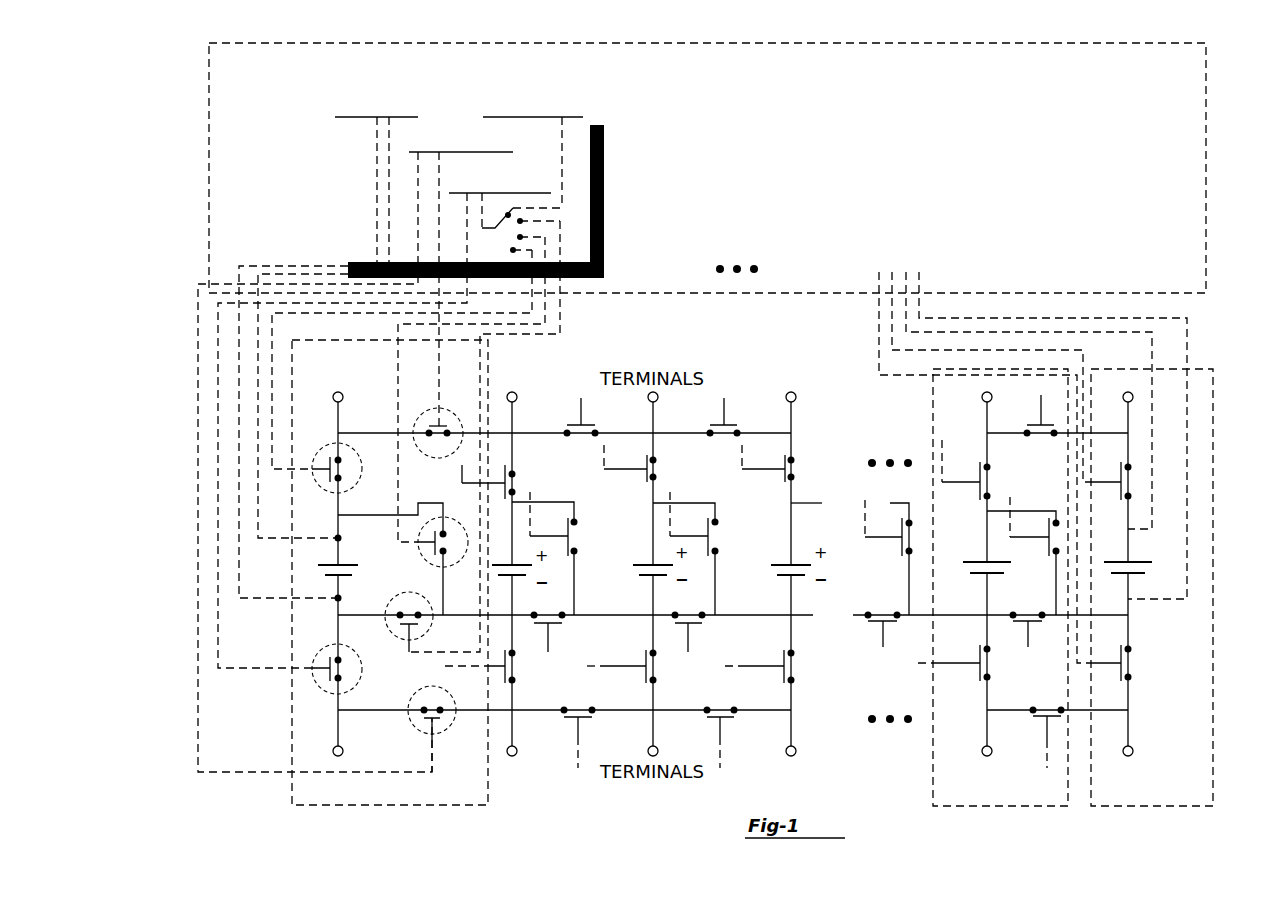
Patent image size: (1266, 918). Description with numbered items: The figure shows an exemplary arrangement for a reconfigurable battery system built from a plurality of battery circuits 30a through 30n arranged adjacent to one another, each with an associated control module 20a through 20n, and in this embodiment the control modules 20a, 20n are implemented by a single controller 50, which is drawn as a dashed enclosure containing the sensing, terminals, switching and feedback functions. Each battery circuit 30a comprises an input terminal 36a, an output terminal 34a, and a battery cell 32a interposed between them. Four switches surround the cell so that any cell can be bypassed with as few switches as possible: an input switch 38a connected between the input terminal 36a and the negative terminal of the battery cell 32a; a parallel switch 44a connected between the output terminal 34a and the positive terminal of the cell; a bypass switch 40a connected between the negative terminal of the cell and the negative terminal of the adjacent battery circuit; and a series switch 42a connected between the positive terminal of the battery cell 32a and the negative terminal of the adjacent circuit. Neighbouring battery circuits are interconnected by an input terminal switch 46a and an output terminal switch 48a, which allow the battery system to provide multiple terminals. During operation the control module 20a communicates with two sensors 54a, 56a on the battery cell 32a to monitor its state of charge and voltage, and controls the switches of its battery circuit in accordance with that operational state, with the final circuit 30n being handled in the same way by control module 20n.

The controller 50 is at (1207, 188).
The control module 20a is at (335, 176).
The control module 20n is at (955, 240).
The battery circuit 30a is at (488, 765).
The battery circuit 30n is at (1185, 806).
The battery cell 32a is at (333, 577).
The output terminal 34a is at (336, 392).
The input terminal 36a is at (345, 748).
The input switch 38a is at (327, 690).
The bypass switch 40a is at (405, 637).
The series switch 42a is at (423, 553).
The parallel switch 44a is at (315, 483).
The input terminal switch 46a is at (445, 730).
The output terminal switch 48a is at (452, 410).
The sensor 54a is at (338, 600).
The sensor 56a is at (338, 540).